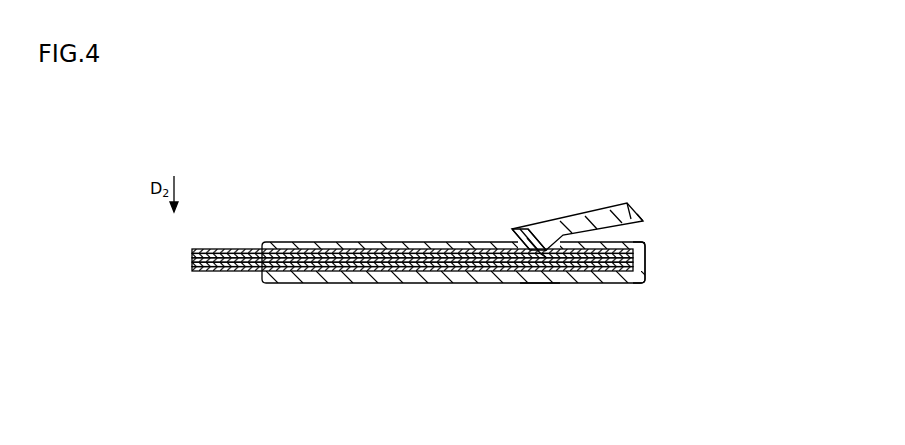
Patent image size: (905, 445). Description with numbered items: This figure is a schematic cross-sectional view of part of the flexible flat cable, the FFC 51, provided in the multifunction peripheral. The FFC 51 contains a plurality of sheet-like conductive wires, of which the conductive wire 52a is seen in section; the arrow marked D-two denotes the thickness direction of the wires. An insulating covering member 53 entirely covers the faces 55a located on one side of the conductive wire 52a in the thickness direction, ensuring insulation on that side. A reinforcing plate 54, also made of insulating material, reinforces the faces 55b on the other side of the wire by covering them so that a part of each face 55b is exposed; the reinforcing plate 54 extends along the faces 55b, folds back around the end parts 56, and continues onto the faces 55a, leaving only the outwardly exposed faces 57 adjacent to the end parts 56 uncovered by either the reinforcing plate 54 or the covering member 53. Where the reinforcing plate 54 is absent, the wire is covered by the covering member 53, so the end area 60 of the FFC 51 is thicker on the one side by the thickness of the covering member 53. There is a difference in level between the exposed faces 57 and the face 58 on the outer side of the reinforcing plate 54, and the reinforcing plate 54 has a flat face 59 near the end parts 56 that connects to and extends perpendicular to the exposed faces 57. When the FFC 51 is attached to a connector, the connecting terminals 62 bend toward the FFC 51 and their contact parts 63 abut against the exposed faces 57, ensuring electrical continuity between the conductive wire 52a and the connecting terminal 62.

The FFC 51 is at (688, 232).
The conductive wire 52a is at (208, 250).
The insulating covering member 53 is at (241, 255).
The reinforcing plate 54 is at (286, 243).
The face 55a is at (236, 272).
The face 55b is at (375, 259).
The end part 56 is at (624, 285).
The exposed face 57 is at (530, 240).
The face 58 is at (600, 241).
The face 59 is at (525, 237).
The end area 60 is at (643, 393).
The connecting terminal 62 is at (590, 218).
The contact part 63 is at (540, 285).